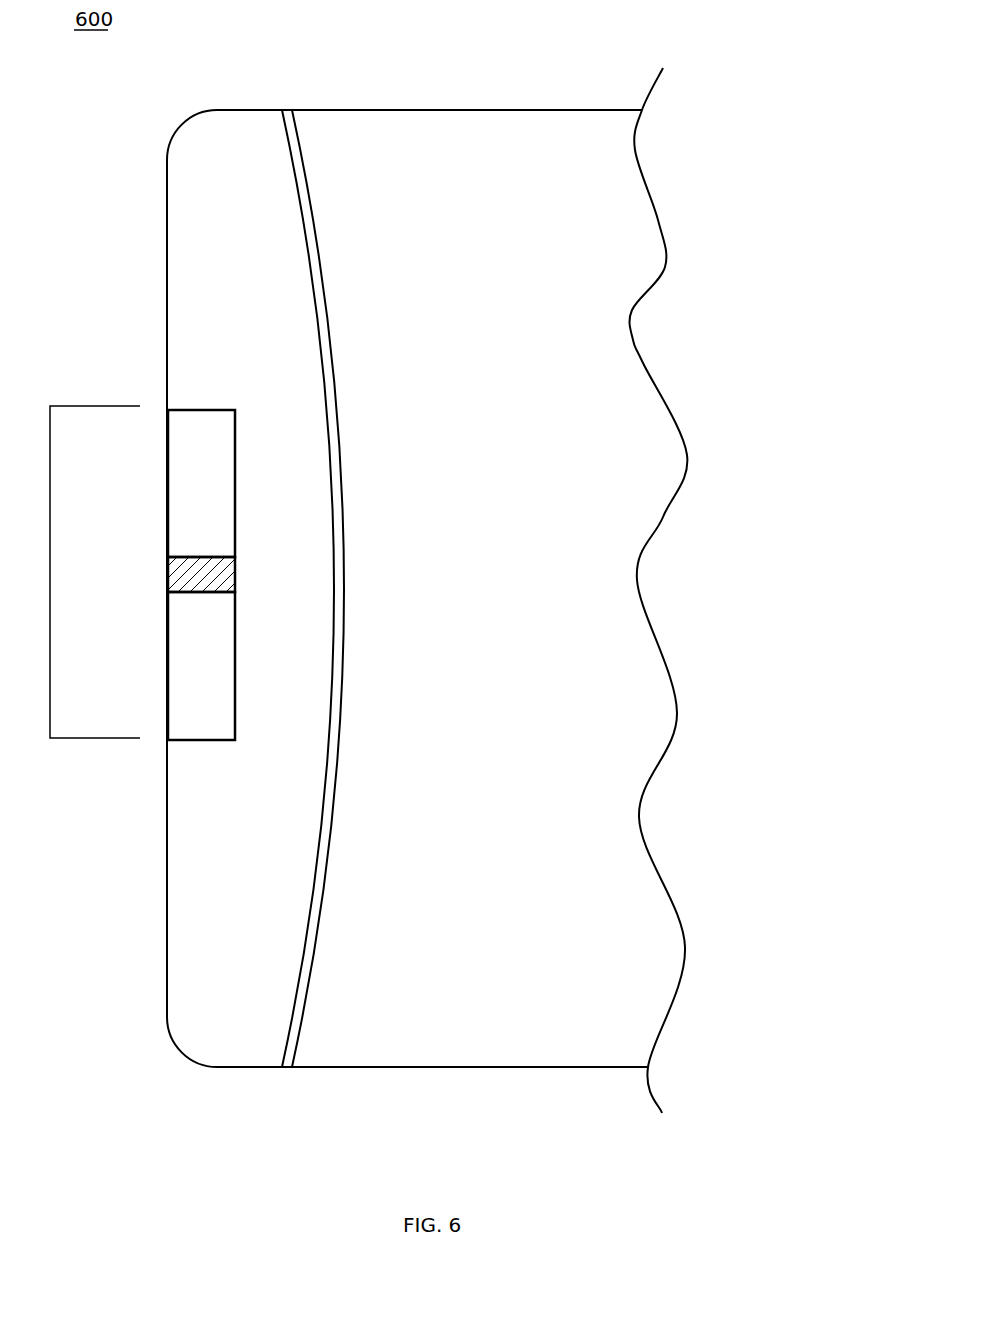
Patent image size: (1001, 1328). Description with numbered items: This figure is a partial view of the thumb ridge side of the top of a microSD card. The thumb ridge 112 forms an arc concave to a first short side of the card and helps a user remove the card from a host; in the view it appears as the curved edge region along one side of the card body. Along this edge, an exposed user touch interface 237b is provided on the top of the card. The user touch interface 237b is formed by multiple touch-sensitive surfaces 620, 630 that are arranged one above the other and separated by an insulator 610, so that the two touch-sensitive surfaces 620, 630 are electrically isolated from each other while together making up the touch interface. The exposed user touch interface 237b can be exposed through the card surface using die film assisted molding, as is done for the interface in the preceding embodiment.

The thumb ridge 112 is at (203, 936).
The exposed user touch interface 237b is at (97, 406).
The touch-sensitive surface 620 is at (192, 493).
The insulator 610 is at (217, 575).
The touch-sensitive surface 630 is at (200, 655).